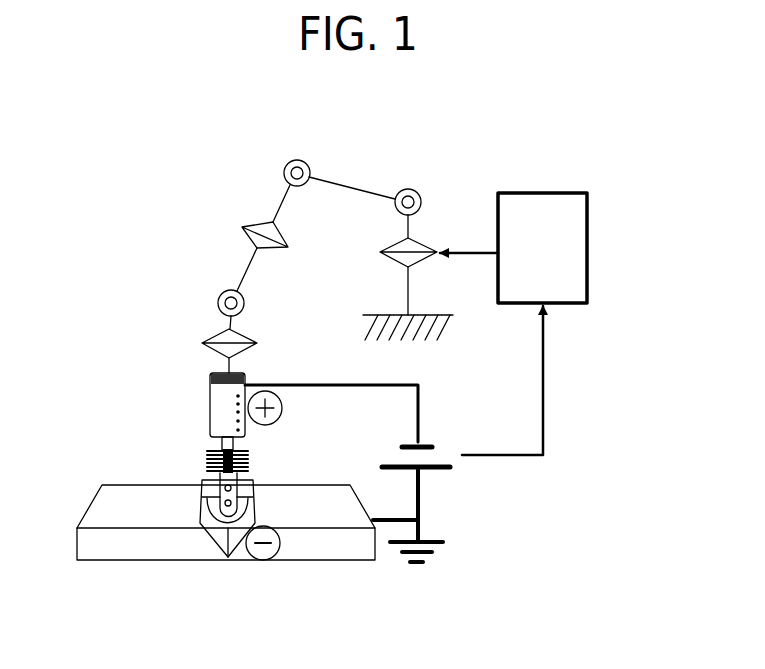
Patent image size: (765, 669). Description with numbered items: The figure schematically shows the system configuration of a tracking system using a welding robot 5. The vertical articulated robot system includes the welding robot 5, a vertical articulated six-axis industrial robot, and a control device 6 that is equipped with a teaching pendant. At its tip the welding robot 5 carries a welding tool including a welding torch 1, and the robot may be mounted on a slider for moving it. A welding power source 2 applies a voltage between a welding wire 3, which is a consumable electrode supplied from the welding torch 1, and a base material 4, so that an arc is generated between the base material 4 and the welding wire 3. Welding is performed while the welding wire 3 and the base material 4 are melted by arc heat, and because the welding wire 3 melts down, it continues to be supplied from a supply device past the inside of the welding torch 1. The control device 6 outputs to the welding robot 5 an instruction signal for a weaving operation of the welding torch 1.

The welding torch 1 is at (210, 403).
The welding power source 2 is at (432, 470).
The welding wire 3 is at (236, 445).
The base material 4 is at (133, 493).
The welding robot 5 is at (250, 212).
The control device 6 is at (590, 230).